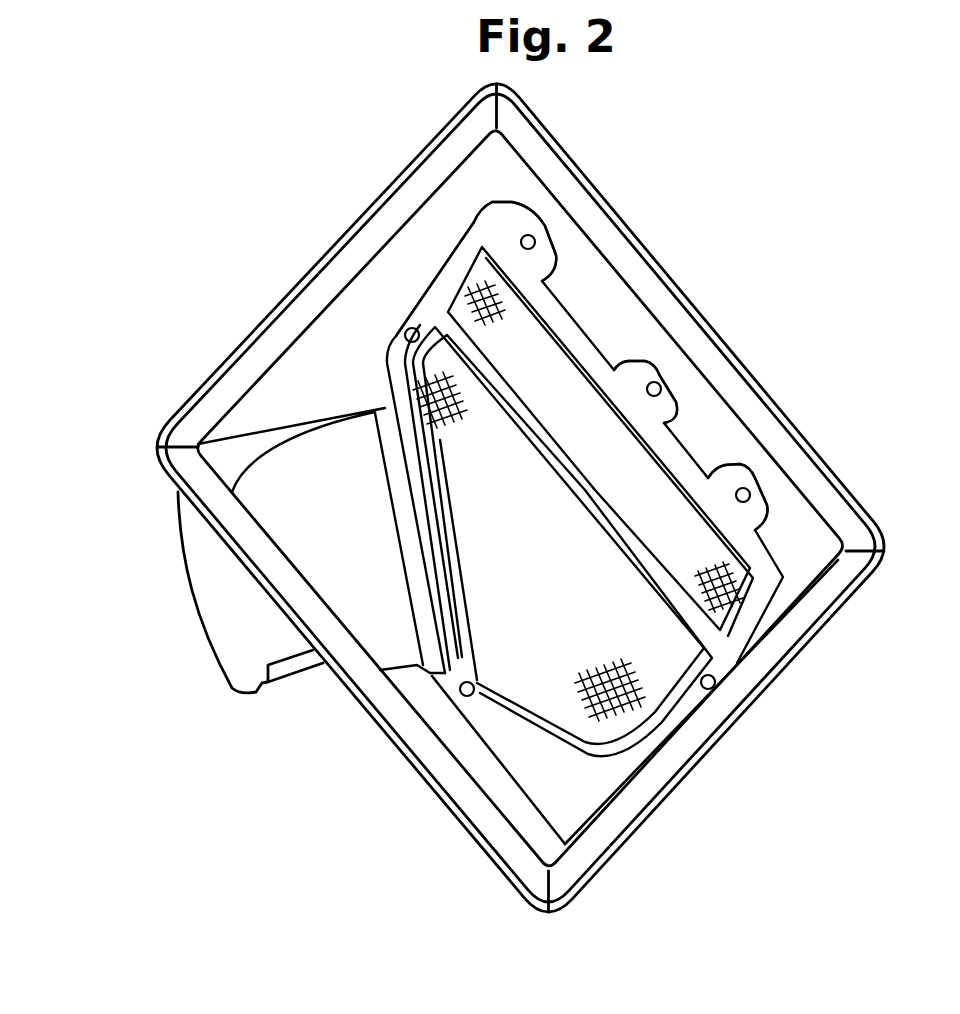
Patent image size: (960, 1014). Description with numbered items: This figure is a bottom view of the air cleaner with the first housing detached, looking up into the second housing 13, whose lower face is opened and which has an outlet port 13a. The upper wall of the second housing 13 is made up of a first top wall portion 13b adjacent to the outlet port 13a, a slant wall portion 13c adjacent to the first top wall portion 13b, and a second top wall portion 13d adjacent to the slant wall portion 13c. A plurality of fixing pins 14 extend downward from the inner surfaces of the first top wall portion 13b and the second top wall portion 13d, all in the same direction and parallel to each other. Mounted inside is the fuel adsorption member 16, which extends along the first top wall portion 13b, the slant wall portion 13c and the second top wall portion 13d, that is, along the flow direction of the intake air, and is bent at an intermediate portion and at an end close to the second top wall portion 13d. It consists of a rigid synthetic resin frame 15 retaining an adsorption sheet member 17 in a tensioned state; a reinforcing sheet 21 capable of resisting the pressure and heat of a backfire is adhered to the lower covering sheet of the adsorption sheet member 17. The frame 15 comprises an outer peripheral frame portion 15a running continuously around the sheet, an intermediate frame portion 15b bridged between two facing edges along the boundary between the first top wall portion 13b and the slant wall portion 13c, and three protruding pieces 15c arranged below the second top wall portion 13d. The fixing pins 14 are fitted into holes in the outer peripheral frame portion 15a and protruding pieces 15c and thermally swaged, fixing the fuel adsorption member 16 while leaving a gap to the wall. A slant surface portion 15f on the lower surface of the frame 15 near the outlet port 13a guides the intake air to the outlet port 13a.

The second housing 13 is at (644, 242).
The outlet port 13a is at (195, 573).
The first top wall portion 13b is at (583, 817).
The slant wall portion 13c is at (767, 627).
The second top wall portion 13d is at (820, 540).
The fixing pins 14 is at (534, 242).
The frame 15 is at (685, 705).
The outer peripheral frame portion 15a is at (452, 267).
The intermediate frame portion 15b is at (580, 500).
The protruding pieces 15c is at (534, 210).
The slant surface portion 15f is at (437, 524).
The fuel adsorption member 16 is at (790, 618).
The adsorption sheet member 17 is at (622, 725).
The reinforcing sheet 21 is at (656, 471).